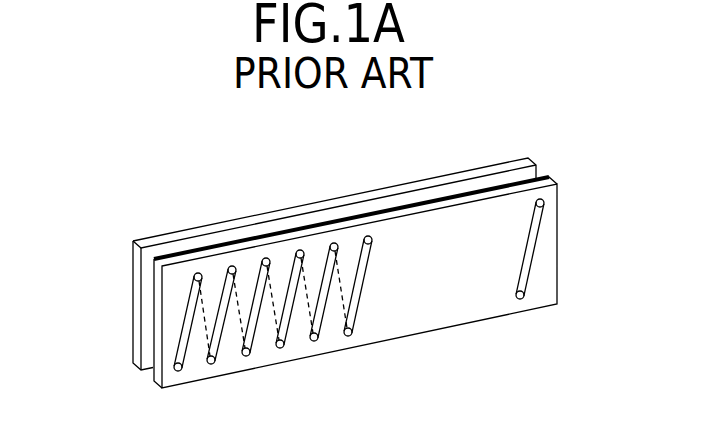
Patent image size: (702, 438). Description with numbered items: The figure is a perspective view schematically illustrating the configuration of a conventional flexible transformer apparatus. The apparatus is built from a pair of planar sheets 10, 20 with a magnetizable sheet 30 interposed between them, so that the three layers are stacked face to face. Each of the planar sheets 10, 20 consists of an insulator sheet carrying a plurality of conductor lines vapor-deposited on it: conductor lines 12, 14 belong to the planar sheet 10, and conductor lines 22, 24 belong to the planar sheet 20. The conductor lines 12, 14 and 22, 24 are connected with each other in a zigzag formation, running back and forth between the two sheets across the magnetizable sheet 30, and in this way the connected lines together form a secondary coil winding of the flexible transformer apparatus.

The planar sheet 10 is at (427, 205).
The conductor line 12 is at (185, 350).
The conductor line 14 is at (220, 340).
The planar sheet 20 is at (357, 195).
The conductor line 22 is at (207, 298).
The conductor line 24 is at (238, 292).
The magnetizable sheet 30 is at (148, 308).